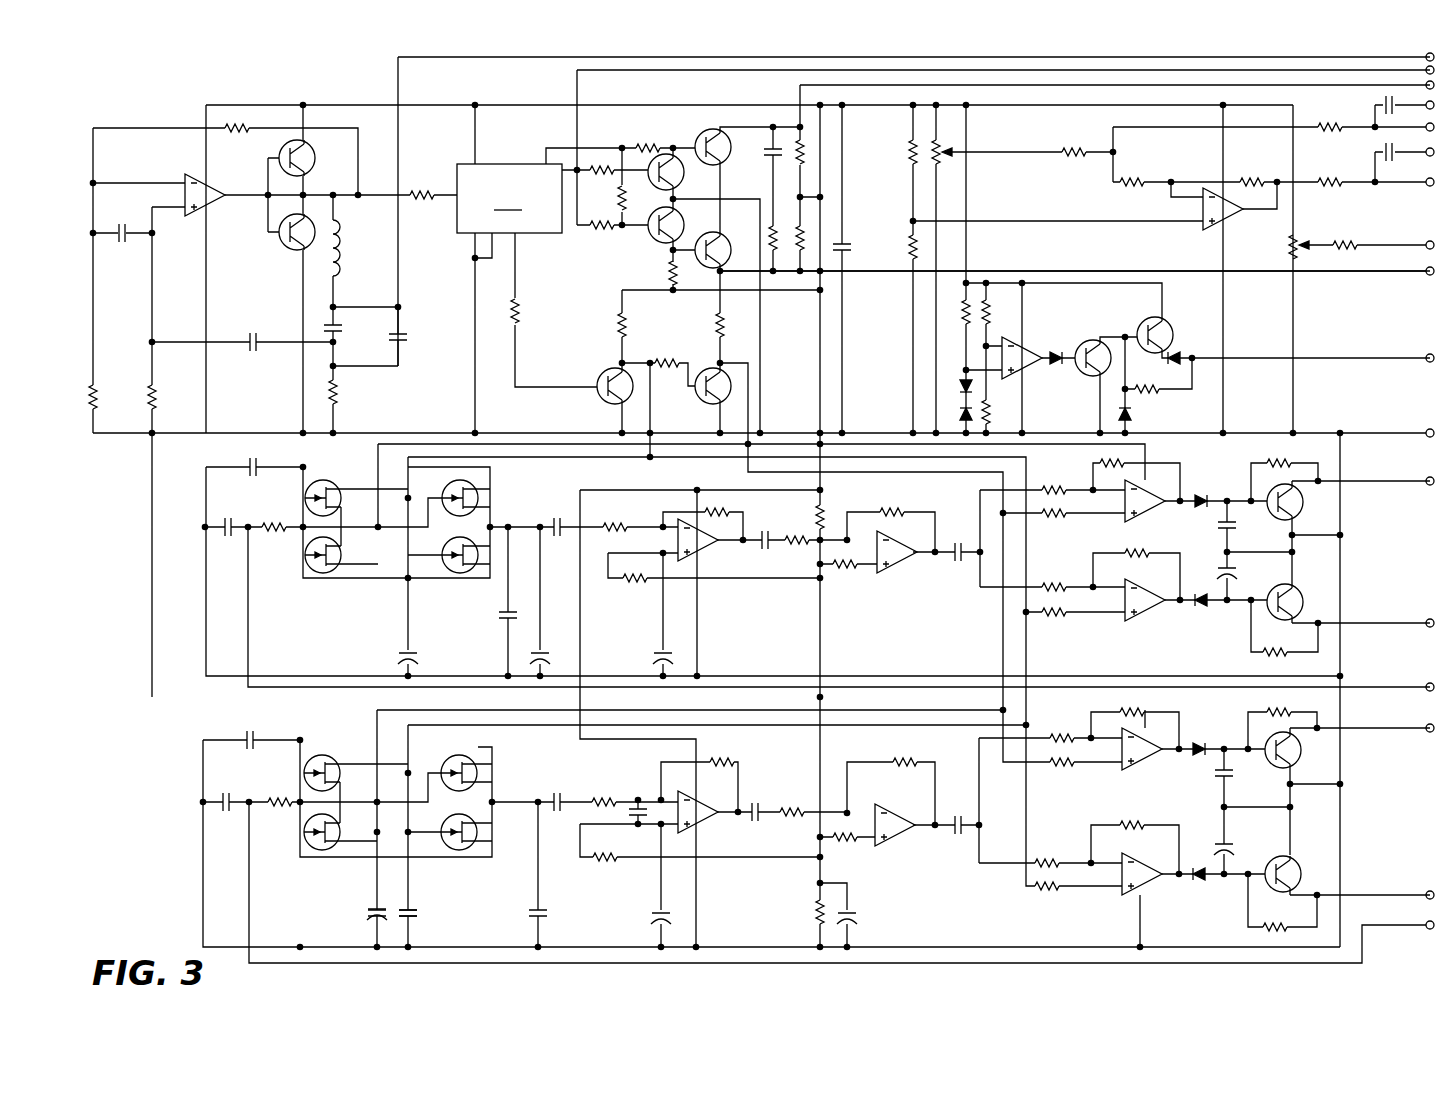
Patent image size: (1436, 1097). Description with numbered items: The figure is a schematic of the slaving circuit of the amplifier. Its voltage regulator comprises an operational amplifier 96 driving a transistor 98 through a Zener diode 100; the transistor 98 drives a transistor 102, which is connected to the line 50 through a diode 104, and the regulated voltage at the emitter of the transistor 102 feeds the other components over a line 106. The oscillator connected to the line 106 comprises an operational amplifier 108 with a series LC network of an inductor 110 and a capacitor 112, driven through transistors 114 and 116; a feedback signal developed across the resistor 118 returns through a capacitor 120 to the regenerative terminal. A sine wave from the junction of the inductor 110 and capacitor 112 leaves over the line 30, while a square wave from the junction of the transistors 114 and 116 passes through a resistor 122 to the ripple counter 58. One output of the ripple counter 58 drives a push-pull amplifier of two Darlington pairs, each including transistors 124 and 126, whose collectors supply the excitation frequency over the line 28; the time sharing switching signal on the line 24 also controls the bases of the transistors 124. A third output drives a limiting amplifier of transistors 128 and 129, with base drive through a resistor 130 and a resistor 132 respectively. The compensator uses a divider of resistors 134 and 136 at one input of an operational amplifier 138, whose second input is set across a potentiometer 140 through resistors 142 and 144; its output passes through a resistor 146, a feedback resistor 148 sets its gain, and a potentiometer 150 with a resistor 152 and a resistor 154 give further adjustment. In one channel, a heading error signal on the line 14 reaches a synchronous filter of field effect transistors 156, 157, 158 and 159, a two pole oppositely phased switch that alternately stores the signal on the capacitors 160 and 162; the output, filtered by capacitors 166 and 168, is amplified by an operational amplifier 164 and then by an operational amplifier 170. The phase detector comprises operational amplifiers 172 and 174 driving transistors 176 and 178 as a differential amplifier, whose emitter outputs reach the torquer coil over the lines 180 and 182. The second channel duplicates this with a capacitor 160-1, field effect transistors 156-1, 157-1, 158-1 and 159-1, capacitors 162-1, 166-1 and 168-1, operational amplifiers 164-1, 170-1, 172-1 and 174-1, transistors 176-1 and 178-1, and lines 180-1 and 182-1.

The line 14 is at (256, 660).
The line 24 is at (576, 86).
The line 28 is at (1338, 85).
The line 30 is at (398, 80).
The line 50 is at (1374, 358).
The ripple counter 58 is at (509, 198).
The operational amplifier 96 is at (1025, 346).
The transistor 98 is at (1084, 384).
The Zener diode 100 is at (1080, 350).
The transistor 102 is at (1166, 322).
The diode 104 is at (1178, 355).
The line 106 is at (974, 196).
The operational amplifier 108 is at (189, 187).
The inductor 110 is at (342, 236).
The capacitor 112 is at (341, 328).
The transistor 114 is at (318, 154).
The transistor 116 is at (280, 245).
The resistor 118 is at (337, 394).
The capacitor 120 is at (248, 338).
The resistor 122 is at (424, 193).
The transistors 124 is at (648, 240).
The transistors 126 is at (733, 214).
The transistor 128 is at (596, 368).
The transistor 129 is at (704, 404).
The resistor 130 is at (520, 307).
The resistor 132 is at (664, 361).
The resistor 134 is at (902, 154).
The resistor 136 is at (902, 242).
The operational amplifier 138 is at (1210, 231).
The potentiometer 140 is at (948, 150).
The resistor 142 is at (1078, 138).
The resistor 144 is at (1136, 177).
The resistor 146 is at (1328, 176).
The feedback resistor 148 is at (1250, 176).
The potentiometer 150 is at (1284, 242).
The resistor 152 is at (1346, 244).
The resistor 154 is at (1334, 124).
The field effect transistor 156 is at (340, 496).
The field effect transistor 157 is at (339, 547).
The field effect transistor 158 is at (456, 488).
The field effect transistor 159 is at (446, 562).
The capacitor 160 is at (245, 462).
The capacitor 162 is at (403, 647).
The operational amplifier 164 is at (706, 552).
The capacitor 166 is at (499, 620).
The capacitor 168 is at (549, 646).
The operational amplifier 170 is at (894, 560).
The operational amplifier 172 is at (1148, 508).
The operational amplifier 174 is at (1146, 616).
The transistor 176 is at (1315, 514).
The transistor 178 is at (1295, 592).
The line 180 is at (1384, 480).
The line 182 is at (1376, 622).
The capacitor 160-1 is at (262, 732).
The field effect transistor 156-1 is at (304, 776).
The field effect transistor 157-1 is at (340, 828).
The field effect transistor 158-1 is at (491, 756).
The field effect transistor 159-1 is at (468, 859).
The capacitor 162-1 is at (318, 912).
The capacitor 166-1 is at (423, 907).
The capacitor 168-1 is at (547, 910).
The operational amplifier 164-1 is at (716, 824).
The operational amplifier 170-1 is at (896, 834).
The operational amplifier 172-1 is at (1140, 764).
The operational amplifier 174-1 is at (1154, 884).
The transistor 176-1 is at (1306, 751).
The transistor 178-1 is at (1304, 866).
The output terminal line 180-1 is at (1370, 726).
The output terminal line 182-1 is at (1386, 892).